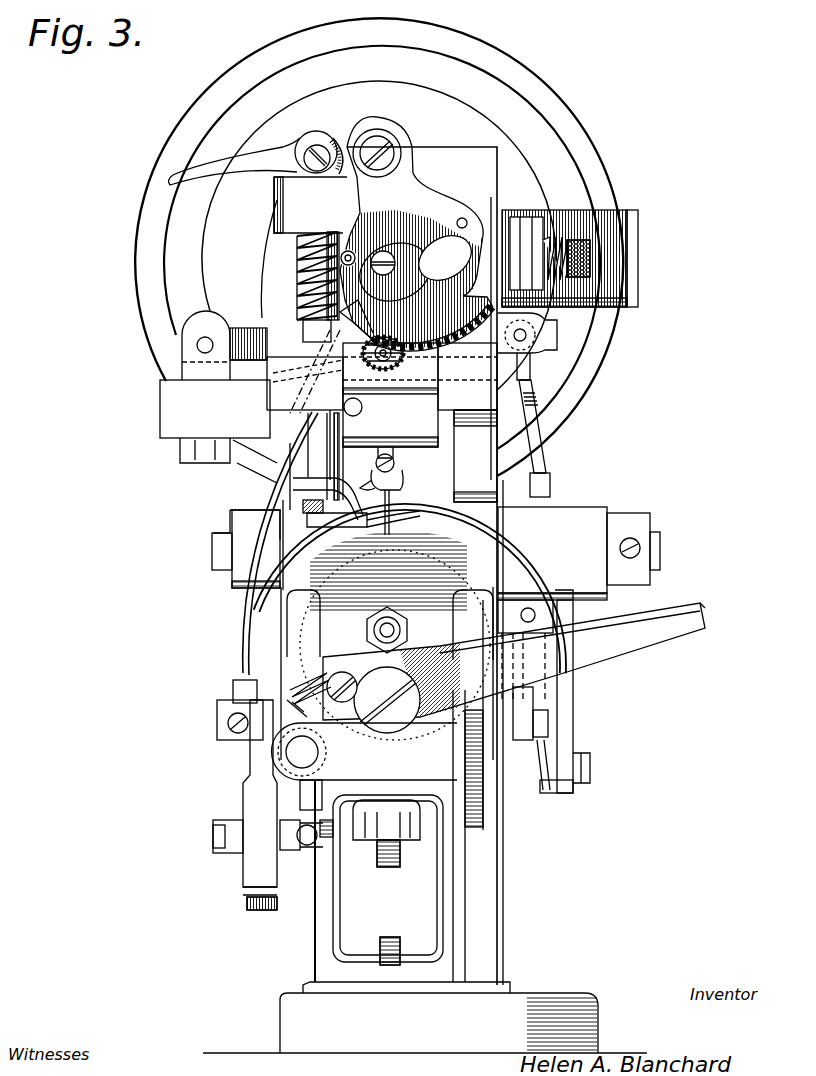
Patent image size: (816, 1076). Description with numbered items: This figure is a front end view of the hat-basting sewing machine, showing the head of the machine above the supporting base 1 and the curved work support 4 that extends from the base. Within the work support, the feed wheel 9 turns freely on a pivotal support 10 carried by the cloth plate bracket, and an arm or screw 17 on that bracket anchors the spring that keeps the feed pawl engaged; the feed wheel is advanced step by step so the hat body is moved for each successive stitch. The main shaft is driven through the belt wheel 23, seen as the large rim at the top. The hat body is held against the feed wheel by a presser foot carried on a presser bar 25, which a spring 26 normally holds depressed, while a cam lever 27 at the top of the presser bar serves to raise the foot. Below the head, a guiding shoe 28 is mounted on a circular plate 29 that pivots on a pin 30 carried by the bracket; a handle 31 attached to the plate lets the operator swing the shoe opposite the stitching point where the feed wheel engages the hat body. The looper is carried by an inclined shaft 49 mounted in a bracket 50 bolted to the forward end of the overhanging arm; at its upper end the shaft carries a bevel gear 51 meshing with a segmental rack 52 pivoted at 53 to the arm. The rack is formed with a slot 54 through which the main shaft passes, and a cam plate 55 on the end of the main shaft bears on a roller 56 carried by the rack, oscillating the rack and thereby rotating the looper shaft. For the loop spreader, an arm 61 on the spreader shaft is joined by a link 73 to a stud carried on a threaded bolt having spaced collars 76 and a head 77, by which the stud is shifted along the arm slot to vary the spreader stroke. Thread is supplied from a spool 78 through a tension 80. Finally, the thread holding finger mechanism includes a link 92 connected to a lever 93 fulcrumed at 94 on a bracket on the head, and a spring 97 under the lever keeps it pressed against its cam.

The supporting base 1 is at (425, 1017).
The work support 4 is at (407, 565).
The feed wheel 9 is at (283, 672).
The pivotal support 10 is at (389, 627).
The arm or screw 17 is at (356, 490).
The belt wheel 23 is at (142, 247).
The presser bar 25 is at (320, 438).
The spring 26 is at (303, 280).
The cam lever 27 is at (277, 155).
The guiding shoe 28 is at (450, 520).
The circular plate 29 is at (540, 591).
The pin 30 is at (398, 724).
The handle 31 is at (623, 637).
The inclined shaft 49 is at (405, 362).
The bracket 50 is at (390, 395).
The bevel gear 51 is at (408, 360).
The segmental rack 52 is at (460, 297).
The pivot 53 is at (381, 143).
The slot 54 is at (430, 233).
The cam plate 55 is at (425, 278).
The roller 56 is at (350, 252).
The arm 61 is at (260, 767).
The link 73 is at (235, 845).
The spaced collars 76 is at (253, 873).
The head 77 is at (257, 910).
The spool 78 is at (610, 305).
The tension 80 is at (533, 247).
The link 92 is at (542, 451).
The lever 93 is at (545, 336).
The fulcrum 94 is at (208, 340).
The spring 97 is at (305, 371).